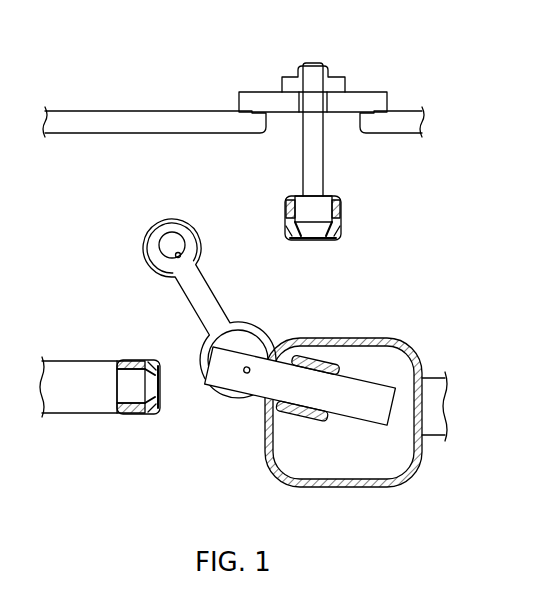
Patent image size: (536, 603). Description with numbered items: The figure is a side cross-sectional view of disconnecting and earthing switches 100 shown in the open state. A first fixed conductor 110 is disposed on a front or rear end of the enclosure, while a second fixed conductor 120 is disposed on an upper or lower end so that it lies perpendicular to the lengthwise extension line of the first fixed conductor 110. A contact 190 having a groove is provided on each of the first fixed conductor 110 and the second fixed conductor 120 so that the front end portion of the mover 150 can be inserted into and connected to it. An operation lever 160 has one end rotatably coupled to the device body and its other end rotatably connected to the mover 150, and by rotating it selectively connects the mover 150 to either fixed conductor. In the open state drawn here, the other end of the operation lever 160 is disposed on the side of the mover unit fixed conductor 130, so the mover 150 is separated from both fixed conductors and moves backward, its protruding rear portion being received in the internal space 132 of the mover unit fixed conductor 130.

The disconnecting and earthing switches 100 is at (153, 38).
The first fixed conductor 110 is at (78, 405).
The second fixed conductor 120 is at (319, 172).
The mover unit fixed conductor 130 is at (356, 431).
The internal space 132 is at (367, 453).
The mover 150 is at (299, 366).
The operation lever 160 is at (200, 283).
The contact 190 is at (341, 213).